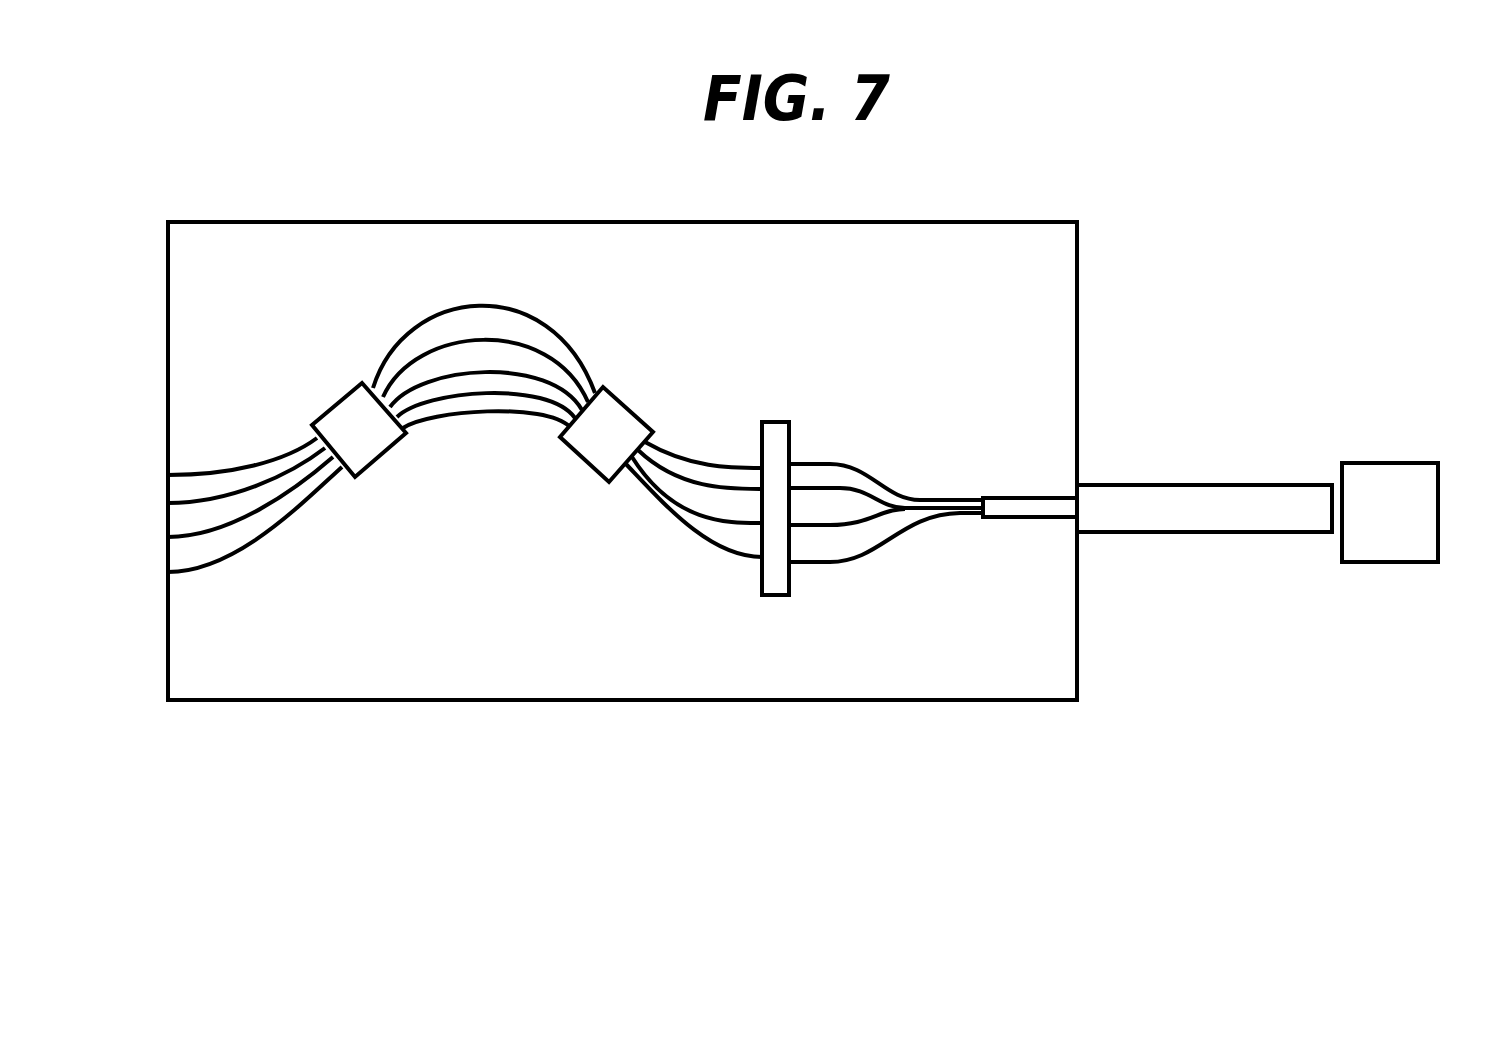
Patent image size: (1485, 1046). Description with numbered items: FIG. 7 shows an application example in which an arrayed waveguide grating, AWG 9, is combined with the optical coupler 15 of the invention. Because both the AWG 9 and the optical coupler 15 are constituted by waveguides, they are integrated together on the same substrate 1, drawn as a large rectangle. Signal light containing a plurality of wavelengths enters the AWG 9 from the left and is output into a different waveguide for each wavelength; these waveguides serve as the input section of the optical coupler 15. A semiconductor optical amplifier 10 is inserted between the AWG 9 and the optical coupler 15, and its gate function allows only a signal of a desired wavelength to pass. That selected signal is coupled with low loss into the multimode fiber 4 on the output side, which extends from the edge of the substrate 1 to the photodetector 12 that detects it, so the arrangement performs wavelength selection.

The substrate 1 is at (868, 702).
The multimode fiber 4 is at (1222, 488).
The AWG 9 is at (443, 438).
The semiconductor optical amplifier 10 is at (755, 602).
The photodetector 12 is at (1385, 483).
The optical coupler 15 is at (1033, 522).